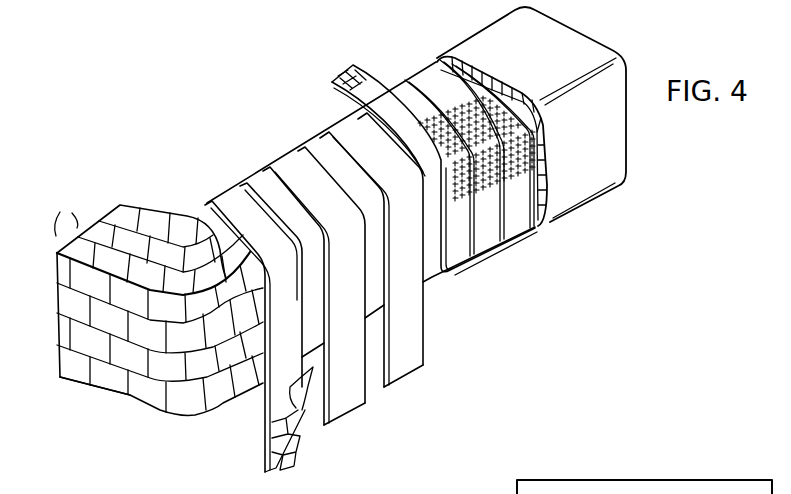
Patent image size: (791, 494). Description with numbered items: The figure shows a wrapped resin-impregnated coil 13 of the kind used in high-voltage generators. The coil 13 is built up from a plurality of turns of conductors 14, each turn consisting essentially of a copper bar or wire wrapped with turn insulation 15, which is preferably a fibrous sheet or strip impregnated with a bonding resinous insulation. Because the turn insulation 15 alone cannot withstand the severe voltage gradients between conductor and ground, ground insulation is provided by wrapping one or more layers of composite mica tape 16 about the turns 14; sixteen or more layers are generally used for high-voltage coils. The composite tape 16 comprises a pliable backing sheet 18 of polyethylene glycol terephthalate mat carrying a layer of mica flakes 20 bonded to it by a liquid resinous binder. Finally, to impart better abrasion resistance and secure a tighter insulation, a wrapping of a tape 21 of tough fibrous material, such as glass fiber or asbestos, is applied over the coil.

The coil 13 is at (157, 212).
The conductors 14 is at (120, 205).
The turn insulation 15 is at (130, 395).
The composite mica tape 16 is at (265, 400).
The backing sheet 18 is at (296, 392).
The mica flakes 20 is at (293, 450).
The tape 21 is at (363, 73).